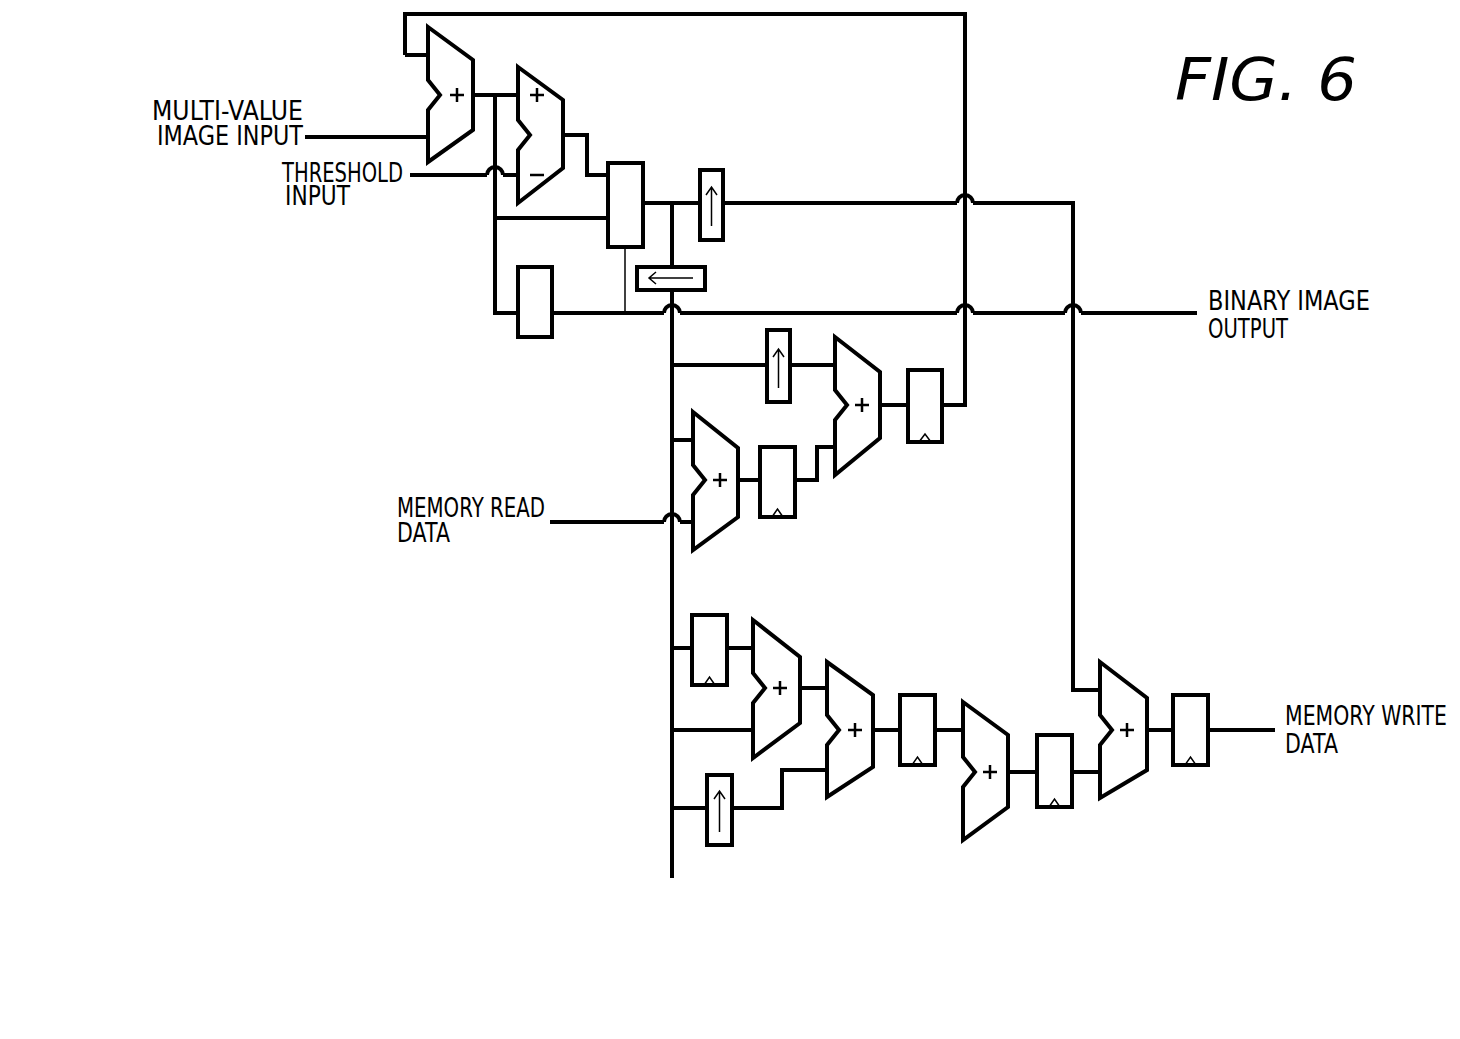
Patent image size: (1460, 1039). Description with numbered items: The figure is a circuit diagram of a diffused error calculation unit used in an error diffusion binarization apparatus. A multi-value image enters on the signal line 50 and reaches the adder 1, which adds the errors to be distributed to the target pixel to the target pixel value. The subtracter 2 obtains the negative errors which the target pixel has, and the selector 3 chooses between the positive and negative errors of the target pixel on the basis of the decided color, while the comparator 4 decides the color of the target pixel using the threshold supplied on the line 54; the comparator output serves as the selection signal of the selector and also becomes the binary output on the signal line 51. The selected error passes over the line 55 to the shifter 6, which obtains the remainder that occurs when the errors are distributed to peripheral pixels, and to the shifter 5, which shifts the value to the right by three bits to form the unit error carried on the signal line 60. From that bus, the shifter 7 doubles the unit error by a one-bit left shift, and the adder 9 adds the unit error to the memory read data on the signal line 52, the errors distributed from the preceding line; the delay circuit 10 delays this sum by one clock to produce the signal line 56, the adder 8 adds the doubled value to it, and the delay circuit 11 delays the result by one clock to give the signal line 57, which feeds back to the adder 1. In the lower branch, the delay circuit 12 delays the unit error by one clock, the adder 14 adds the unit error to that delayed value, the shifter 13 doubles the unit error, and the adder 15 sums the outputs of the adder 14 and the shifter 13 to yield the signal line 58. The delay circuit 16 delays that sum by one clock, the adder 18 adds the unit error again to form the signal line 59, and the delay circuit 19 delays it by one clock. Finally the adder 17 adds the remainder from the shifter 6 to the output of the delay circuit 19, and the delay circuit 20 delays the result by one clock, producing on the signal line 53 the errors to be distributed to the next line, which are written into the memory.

The adder 1 is at (470, 47).
The subtracter 2 is at (556, 80).
The selector 3 is at (640, 160).
The comparator 4 is at (455, 330).
The shifter 5 is at (706, 277).
The shifter 6 is at (712, 168).
The shifter 7 is at (765, 352).
The adder 8 is at (870, 358).
The adder 9 is at (710, 420).
The delay circuit 10 is at (797, 520).
The delay circuit 11 is at (945, 425).
The delay circuit 12 is at (718, 612).
The shifter 13 is at (734, 812).
The adder 14 is at (796, 640).
The adder 15 is at (870, 672).
The delay circuit 16 is at (927, 693).
The adder 17 is at (1135, 685).
The adder 18 is at (1000, 725).
The delay circuit 19 is at (1057, 807).
The delay circuit 20 is at (1200, 695).
The signal line 50 is at (365, 136).
The signal line 51 is at (1117, 313).
The signal line 52 is at (575, 520).
The signal line 53 is at (1222, 733).
The threshold input 54 is at (455, 178).
The signal line 55 is at (1035, 203).
The signal line 56 is at (820, 440).
The signal line 57 is at (965, 345).
The signal line 58 is at (887, 735).
The signal line 59 is at (1026, 780).
The signal line 60 is at (668, 770).